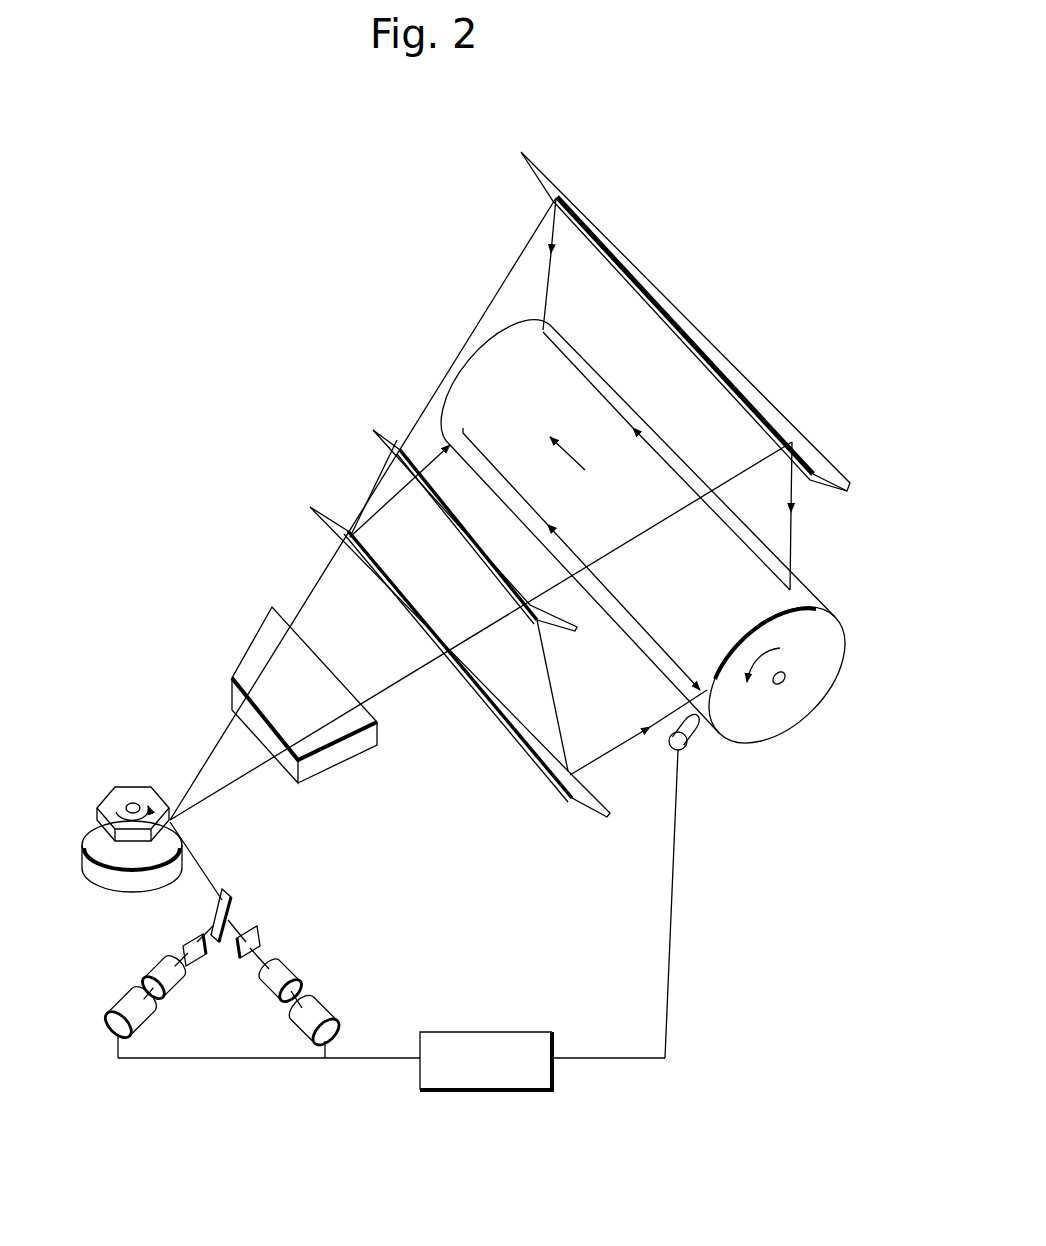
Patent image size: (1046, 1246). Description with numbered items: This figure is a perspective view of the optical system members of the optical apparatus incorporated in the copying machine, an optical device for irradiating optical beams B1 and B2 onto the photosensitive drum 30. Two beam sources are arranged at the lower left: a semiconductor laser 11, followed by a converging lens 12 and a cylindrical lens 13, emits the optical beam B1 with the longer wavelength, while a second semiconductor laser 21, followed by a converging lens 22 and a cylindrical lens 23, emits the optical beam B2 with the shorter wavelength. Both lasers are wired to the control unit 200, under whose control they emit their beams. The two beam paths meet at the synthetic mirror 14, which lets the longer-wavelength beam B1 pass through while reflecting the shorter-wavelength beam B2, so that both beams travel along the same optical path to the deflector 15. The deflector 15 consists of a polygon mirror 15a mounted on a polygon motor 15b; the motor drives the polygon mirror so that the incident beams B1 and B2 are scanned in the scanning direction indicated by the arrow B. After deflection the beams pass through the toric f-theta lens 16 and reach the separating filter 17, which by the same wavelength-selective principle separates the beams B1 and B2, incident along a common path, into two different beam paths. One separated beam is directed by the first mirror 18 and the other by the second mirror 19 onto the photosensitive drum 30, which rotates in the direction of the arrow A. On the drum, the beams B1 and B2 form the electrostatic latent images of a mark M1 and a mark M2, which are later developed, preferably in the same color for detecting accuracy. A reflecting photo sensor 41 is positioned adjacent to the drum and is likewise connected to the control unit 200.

The semiconductor laser 11 is at (328, 1008).
The converging lens 12 is at (296, 967).
The cylindrical lens 13 is at (262, 938).
The synthetic mirror 14 is at (230, 896).
The deflector 15 is at (122, 827).
The polygon mirror 15a is at (113, 789).
The polygon motor 15b is at (100, 880).
The toric f-theta lens 16 is at (342, 762).
The separating filter 17 is at (390, 432).
The first mirror 18 is at (548, 160).
The second mirror 19 is at (586, 812).
The semiconductor laser 21 is at (120, 1003).
The converging lens 22 is at (146, 966).
The cylindrical lens 23 is at (184, 937).
The photosensitive drum 30 is at (776, 740).
The reflecting photo sensor 41 is at (690, 752).
The control unit 200 is at (486, 1045).
The optical beam B1 is at (795, 551).
The optical beam B2 is at (623, 746).
The mark M1 is at (795, 598).
The mark M2 is at (703, 690).
The rotation direction of the photosensitive drum A is at (775, 657).
The scanning direction B is at (579, 469).